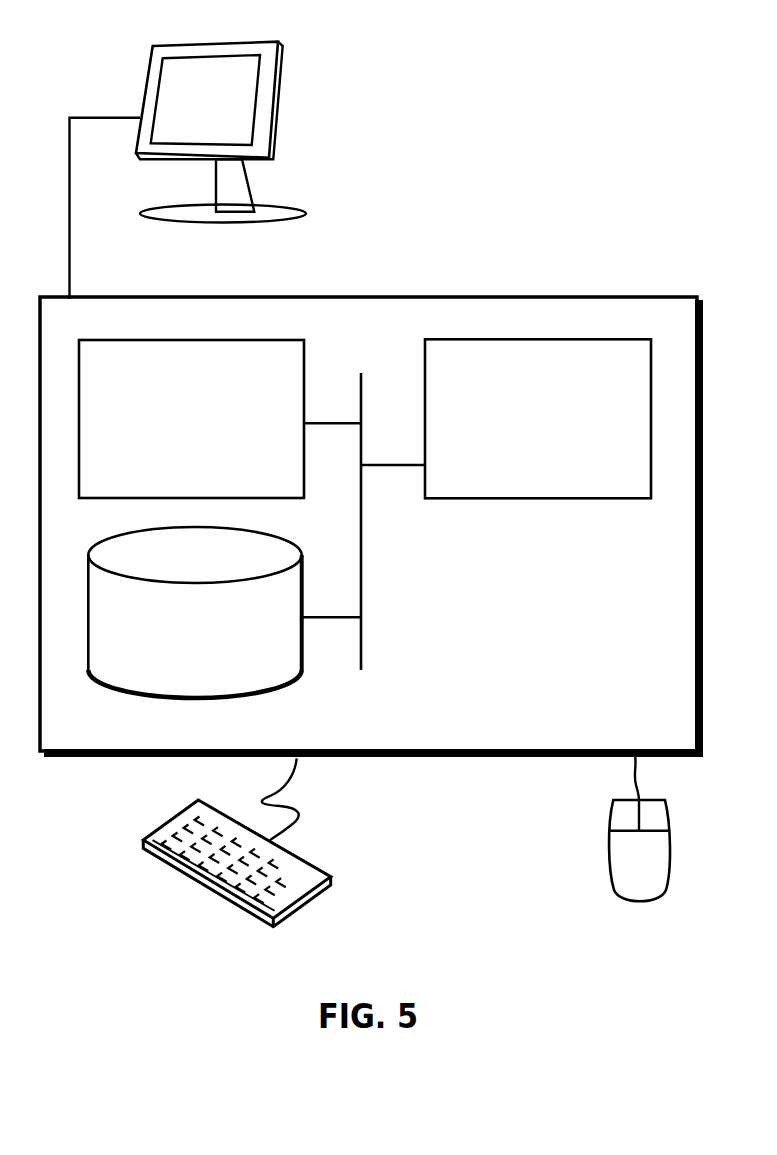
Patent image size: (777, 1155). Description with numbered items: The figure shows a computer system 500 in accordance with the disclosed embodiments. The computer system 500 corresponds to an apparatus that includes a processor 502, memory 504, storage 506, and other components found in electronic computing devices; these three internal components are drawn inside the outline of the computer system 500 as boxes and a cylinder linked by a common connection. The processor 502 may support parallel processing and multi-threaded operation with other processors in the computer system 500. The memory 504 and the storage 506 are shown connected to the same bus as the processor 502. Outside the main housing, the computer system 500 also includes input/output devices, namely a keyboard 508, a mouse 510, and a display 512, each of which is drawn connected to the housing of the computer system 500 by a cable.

The computer system 500 is at (415, 276).
The processor 502 is at (520, 433).
The memory 504 is at (170, 431).
The storage 506 is at (175, 643).
The keyboard 508 is at (160, 863).
The mouse 510 is at (618, 875).
The display 512 is at (188, 170).